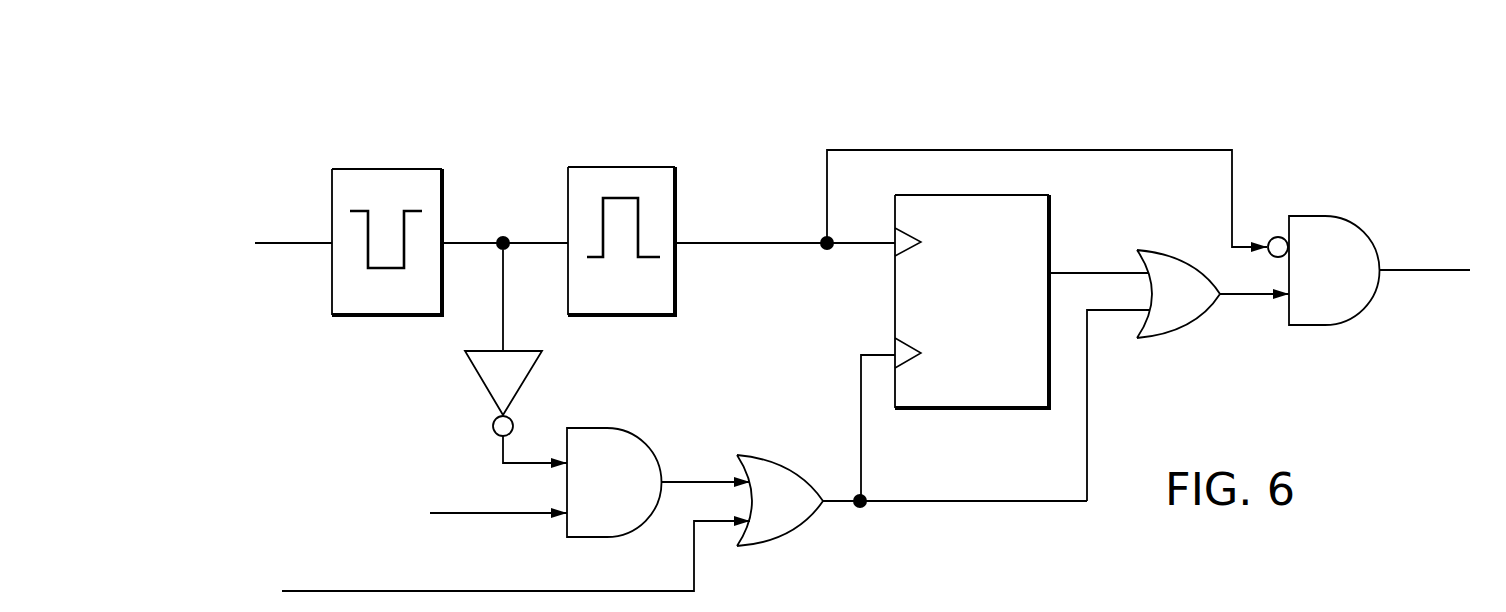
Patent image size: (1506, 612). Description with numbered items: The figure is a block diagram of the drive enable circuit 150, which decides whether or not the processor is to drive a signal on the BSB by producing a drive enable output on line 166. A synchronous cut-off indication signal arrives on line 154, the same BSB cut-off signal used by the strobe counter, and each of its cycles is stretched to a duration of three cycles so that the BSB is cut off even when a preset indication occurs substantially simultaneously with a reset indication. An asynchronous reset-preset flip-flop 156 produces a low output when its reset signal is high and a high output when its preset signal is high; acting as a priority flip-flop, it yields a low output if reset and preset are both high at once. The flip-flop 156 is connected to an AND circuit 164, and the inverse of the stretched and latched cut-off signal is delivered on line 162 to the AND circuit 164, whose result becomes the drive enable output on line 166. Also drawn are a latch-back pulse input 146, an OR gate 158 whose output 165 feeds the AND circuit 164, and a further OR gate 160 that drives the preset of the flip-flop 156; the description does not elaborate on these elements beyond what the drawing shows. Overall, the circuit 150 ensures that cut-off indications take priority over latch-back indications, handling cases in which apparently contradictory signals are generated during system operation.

The L-B pulse signal line 146 is at (402, 591).
The drive enable circuit 150 is at (868, 121).
The line 154 is at (298, 244).
The asynchronous reset-preset flip-flop 156 is at (1049, 214).
The OR gate 158 is at (1165, 330).
The OR gate 160 is at (780, 523).
The line 162 is at (1241, 240).
The AND circuit 164 is at (1352, 298).
The OR gate output line 165 is at (1245, 296).
The line 166 is at (1415, 272).